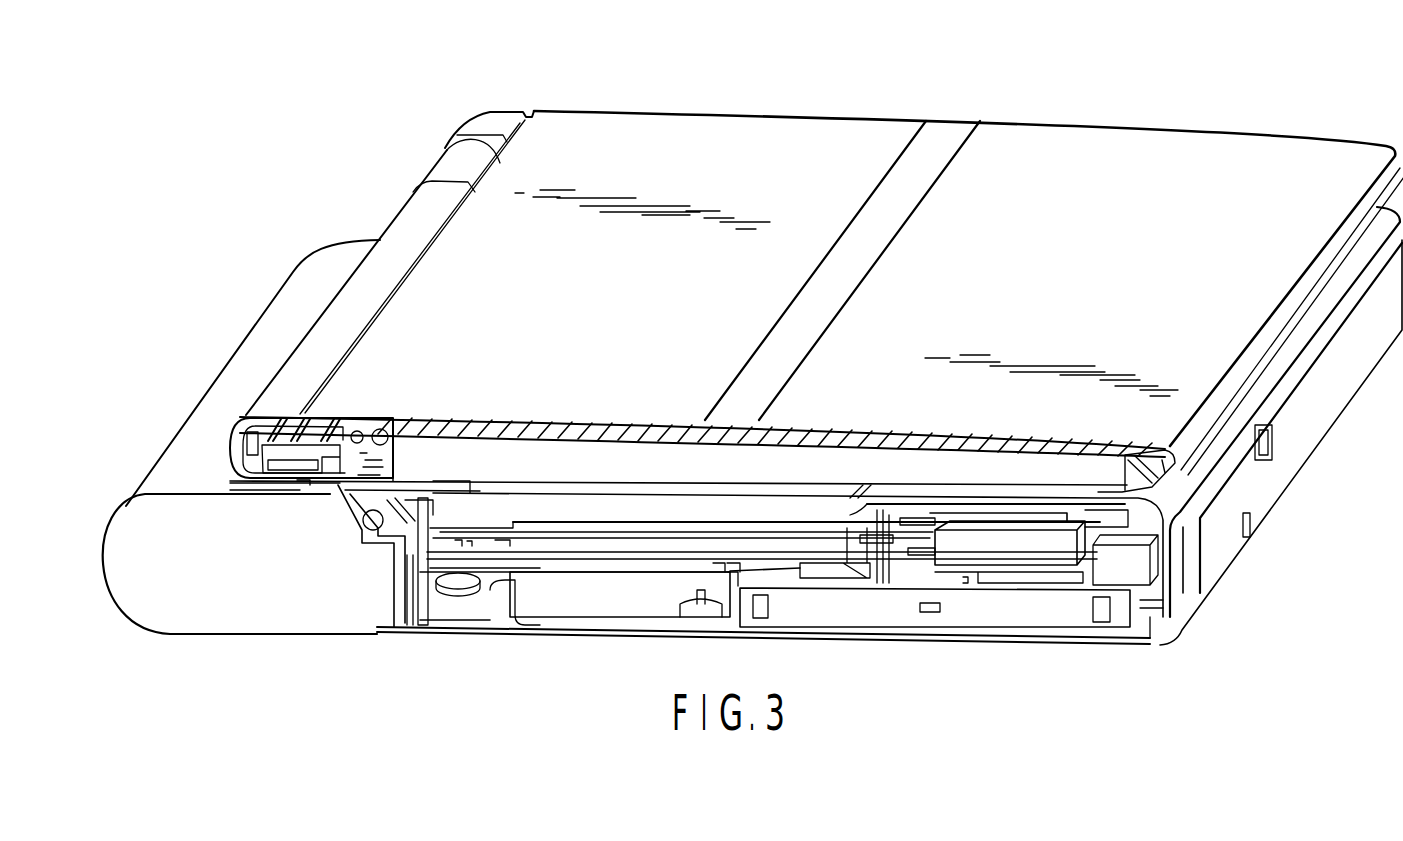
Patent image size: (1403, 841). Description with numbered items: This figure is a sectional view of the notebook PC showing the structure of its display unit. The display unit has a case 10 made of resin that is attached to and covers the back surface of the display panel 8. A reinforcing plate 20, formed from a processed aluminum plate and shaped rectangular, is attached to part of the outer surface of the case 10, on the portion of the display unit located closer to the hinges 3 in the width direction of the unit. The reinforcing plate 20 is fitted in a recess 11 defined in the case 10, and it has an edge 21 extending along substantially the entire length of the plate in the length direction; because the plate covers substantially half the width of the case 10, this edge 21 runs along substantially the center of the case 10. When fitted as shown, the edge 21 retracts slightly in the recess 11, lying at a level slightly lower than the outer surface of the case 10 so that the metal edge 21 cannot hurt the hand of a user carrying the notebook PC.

The case 10 is at (1300, 176).
The edge 21 is at (887, 247).
The hinges 3 is at (447, 148).
The reinforcing plate 20 is at (510, 183).
The recess 11 is at (340, 415).
The display panel 8 is at (520, 460).